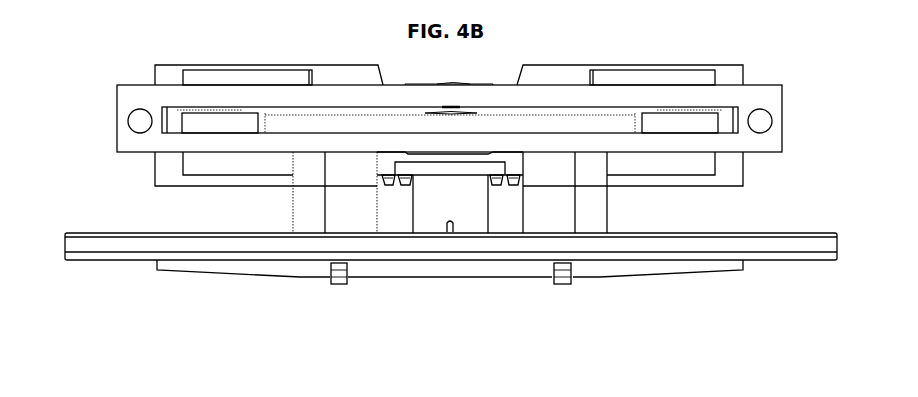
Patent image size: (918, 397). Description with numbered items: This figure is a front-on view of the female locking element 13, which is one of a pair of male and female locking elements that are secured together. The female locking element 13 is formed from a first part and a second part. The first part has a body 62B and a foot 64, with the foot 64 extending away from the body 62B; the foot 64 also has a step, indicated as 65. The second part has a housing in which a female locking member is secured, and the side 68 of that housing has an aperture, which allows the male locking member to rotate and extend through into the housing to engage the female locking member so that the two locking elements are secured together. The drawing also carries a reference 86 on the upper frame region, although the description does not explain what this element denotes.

The female locking element 13 is at (417, 118).
The upper carrier frame 86 is at (728, 82).
The side of housing 68 is at (677, 125).
The foot 64 is at (397, 227).
The body 62B is at (298, 211).
The step 65 is at (84, 273).